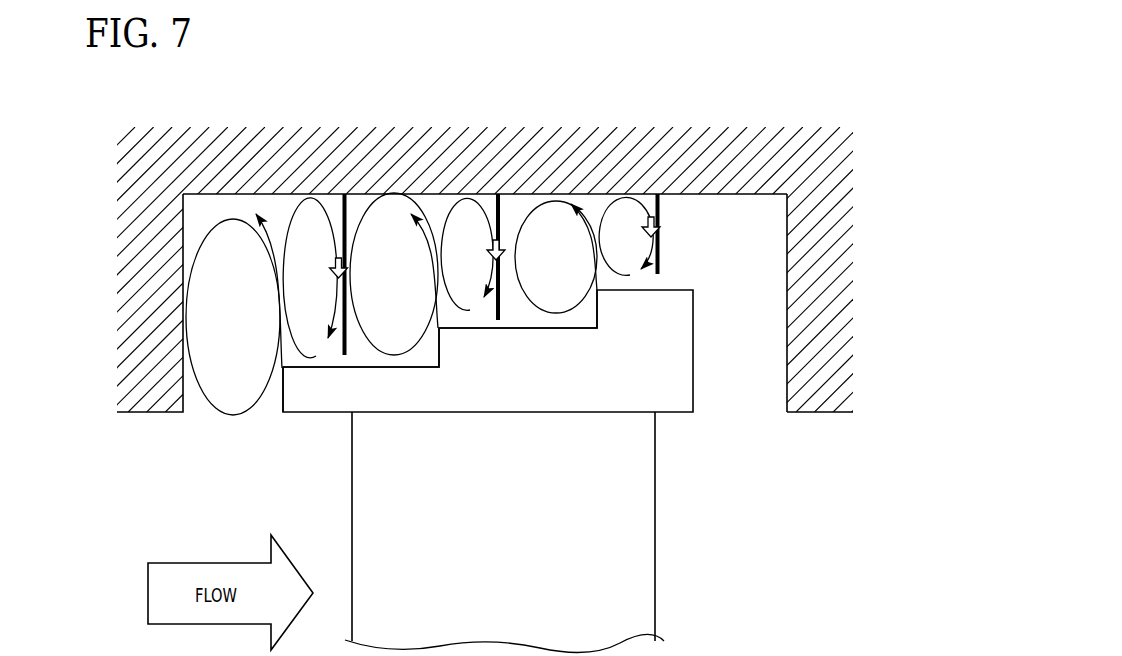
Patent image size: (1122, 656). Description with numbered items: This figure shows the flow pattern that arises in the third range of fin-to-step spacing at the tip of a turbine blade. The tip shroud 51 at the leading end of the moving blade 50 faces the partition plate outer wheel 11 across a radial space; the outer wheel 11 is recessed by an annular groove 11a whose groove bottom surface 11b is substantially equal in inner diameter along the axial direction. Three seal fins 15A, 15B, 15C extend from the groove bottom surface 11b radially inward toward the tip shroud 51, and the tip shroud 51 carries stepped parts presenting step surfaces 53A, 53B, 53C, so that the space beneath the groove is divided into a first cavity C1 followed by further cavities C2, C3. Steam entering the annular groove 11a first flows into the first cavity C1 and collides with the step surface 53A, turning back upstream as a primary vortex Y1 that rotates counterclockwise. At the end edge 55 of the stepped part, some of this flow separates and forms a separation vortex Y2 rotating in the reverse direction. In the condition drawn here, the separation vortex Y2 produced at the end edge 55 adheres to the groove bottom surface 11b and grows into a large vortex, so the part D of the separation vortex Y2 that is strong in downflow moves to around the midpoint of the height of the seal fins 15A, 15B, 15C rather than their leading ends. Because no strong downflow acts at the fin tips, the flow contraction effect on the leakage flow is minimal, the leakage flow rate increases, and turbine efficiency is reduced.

The partition plate outer wheel 11 is at (820, 390).
The annular groove 11a is at (787, 277).
The groove bottom surface 11b is at (745, 194).
The seal fin 15A is at (347, 222).
The seal fin 15B is at (501, 223).
The seal fin 15C is at (660, 212).
The moving blade 50 is at (660, 590).
The tip shroud 51 is at (677, 378).
The step surface 53A is at (282, 397).
The second step portion 53B is at (423, 368).
The third step portion 53C is at (574, 330).
The end edge 55 is at (282, 364).
The first cavity C1 is at (233, 224).
The second cavity C2 is at (397, 225).
The third cavity C3 is at (562, 227).
The primary vortex Y1 is at (213, 413).
The separation vortex Y2 is at (293, 214).
The part strong in downflow D is at (335, 276).